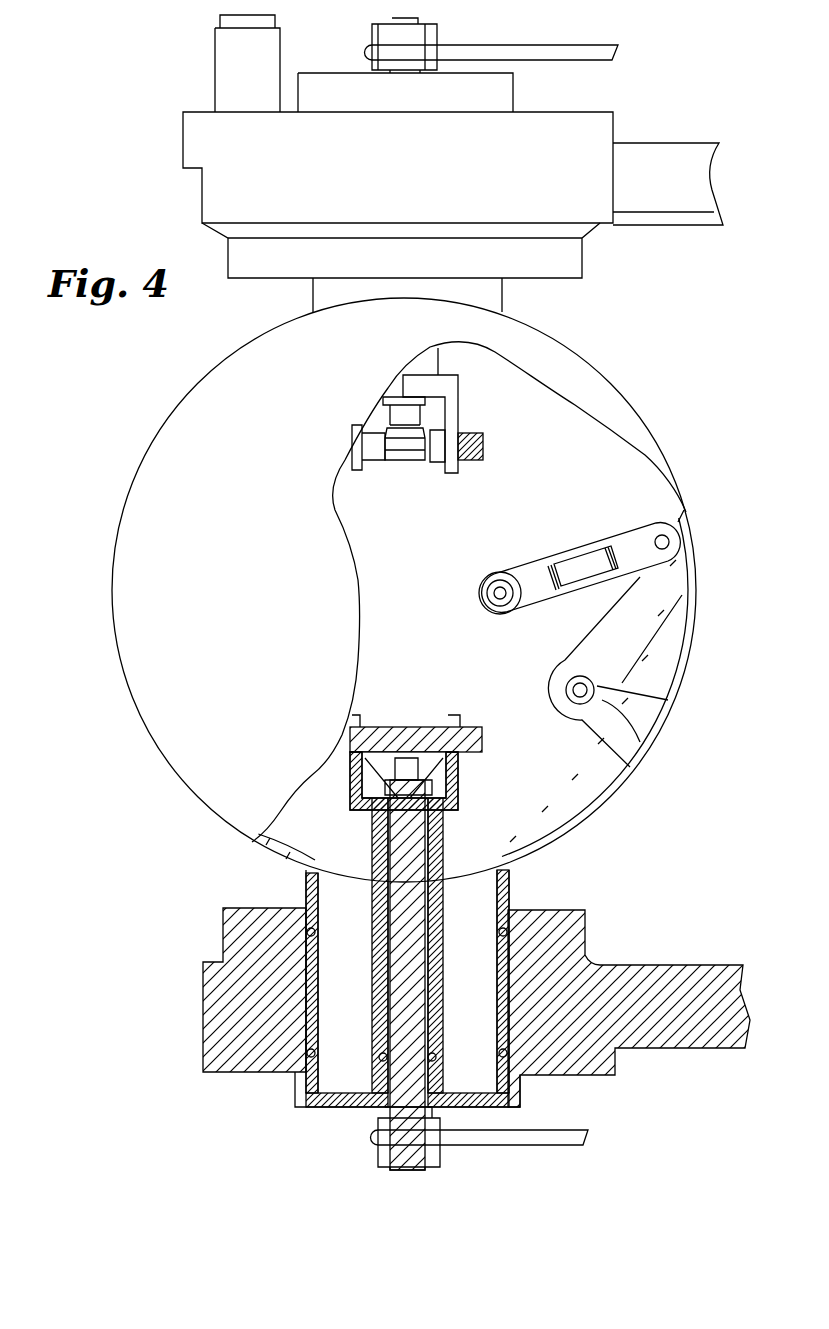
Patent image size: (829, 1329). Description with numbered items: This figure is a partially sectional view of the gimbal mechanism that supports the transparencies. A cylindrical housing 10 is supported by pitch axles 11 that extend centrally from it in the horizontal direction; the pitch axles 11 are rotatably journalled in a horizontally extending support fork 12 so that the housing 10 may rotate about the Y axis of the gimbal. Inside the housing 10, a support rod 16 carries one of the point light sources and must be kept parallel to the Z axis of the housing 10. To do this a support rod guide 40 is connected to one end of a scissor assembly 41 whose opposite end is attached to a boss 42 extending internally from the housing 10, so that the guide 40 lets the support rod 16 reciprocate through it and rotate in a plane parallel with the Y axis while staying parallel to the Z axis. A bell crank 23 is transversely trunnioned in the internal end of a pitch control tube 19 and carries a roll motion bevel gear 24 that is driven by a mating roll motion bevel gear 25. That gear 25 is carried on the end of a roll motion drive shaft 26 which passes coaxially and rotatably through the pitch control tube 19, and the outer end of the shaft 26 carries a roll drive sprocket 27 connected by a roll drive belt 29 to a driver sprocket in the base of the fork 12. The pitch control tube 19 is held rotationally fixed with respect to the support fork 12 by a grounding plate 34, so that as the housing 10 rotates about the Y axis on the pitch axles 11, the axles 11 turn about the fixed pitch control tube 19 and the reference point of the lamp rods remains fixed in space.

The cylindrical housing 10 is at (610, 800).
The pitch axles 11 is at (497, 928).
The support fork 12 is at (670, 143).
The support rods 16 is at (495, 604).
The pitch control tubes 19 is at (458, 390).
The bell cranks 23 is at (483, 455).
The roll motion bevel gear 24 is at (400, 455).
The roll motion bevel gears 25 is at (425, 445).
The roll motion drive shafts 26 is at (383, 415).
The roll drive sprocket 27 is at (437, 42).
The roll drive belts 29 is at (590, 45).
The grounding plate 34 is at (513, 95).
The support rod guide 40 is at (498, 574).
The scissor assembly 41 is at (632, 540).
The boss 42 is at (603, 740).